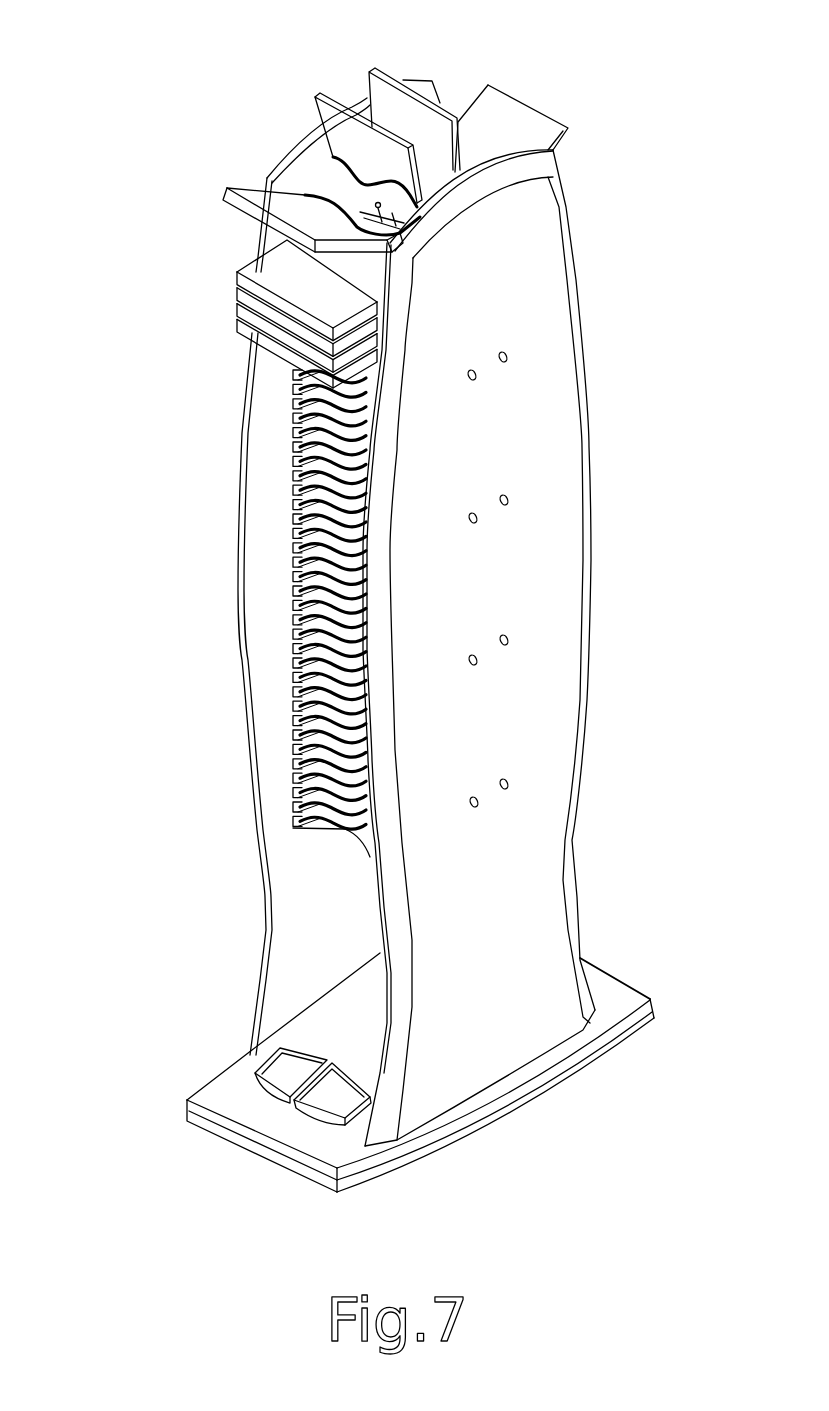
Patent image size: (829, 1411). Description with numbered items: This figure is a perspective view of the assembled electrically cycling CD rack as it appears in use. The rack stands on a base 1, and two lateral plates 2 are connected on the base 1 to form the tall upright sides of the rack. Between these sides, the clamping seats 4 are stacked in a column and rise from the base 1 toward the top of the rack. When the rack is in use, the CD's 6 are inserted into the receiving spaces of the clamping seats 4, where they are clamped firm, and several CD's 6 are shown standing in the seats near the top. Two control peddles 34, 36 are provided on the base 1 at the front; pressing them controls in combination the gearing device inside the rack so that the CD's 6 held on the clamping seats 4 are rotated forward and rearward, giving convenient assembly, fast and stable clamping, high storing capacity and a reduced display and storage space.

The base 1 is at (247, 1102).
The lateral plates 2 is at (538, 271).
The clamping seats 4 is at (282, 172).
The CD's 6 is at (483, 123).
The control peddle 34 is at (272, 1073).
The control peddle 36 is at (325, 1098).